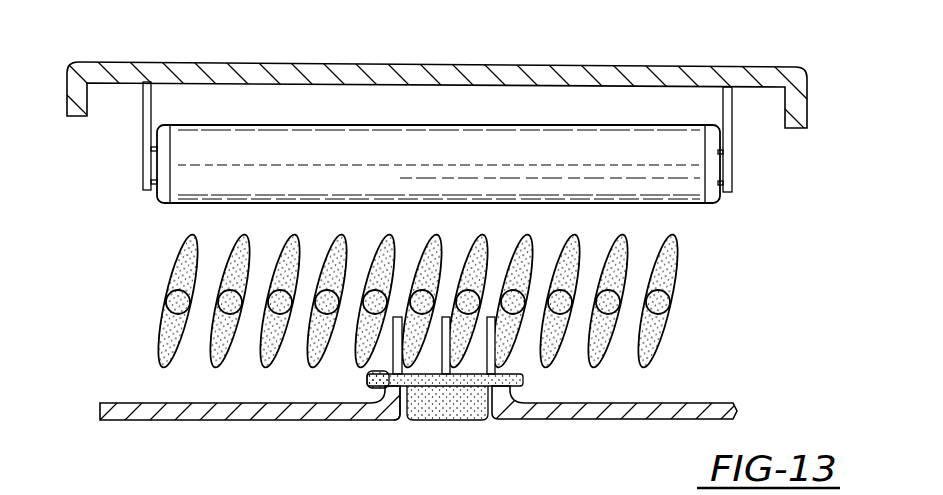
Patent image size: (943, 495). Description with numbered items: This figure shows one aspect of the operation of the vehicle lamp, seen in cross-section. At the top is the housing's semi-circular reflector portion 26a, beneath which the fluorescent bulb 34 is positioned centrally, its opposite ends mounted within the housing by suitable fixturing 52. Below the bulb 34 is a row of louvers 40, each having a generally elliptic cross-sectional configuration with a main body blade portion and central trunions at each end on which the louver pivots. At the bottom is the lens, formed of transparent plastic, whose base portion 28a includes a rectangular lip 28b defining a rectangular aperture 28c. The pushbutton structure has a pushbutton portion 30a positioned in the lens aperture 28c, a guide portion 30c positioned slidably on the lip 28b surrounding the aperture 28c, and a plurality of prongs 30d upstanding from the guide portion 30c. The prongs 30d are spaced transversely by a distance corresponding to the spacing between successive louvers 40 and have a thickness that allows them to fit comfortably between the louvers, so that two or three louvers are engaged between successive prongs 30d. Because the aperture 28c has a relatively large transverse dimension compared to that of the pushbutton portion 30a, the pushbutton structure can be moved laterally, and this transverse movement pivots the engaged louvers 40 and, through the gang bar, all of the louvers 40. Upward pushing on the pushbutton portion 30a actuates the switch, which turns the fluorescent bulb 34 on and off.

The reflector portion 26a is at (341, 62).
The fixturing 52 is at (143, 152).
The bulb 34 is at (190, 207).
The louvers 40 is at (670, 342).
The prongs 30d is at (447, 317).
The guide portion 30c is at (524, 380).
The rectangular lip 28b is at (377, 362).
The pushbutton portion 30a is at (462, 420).
The base portion 28a is at (298, 420).
The rectangular aperture 28c is at (398, 404).